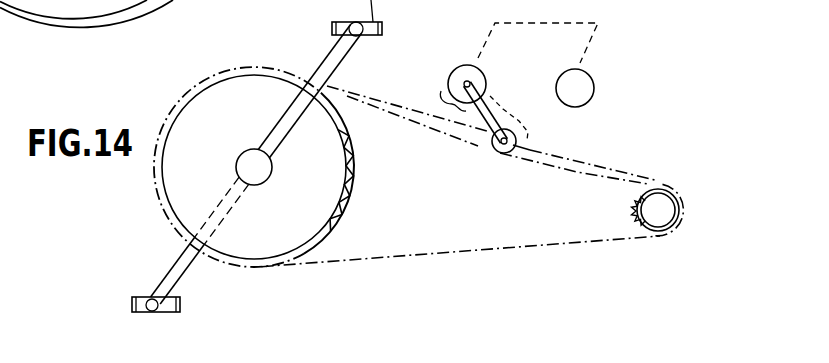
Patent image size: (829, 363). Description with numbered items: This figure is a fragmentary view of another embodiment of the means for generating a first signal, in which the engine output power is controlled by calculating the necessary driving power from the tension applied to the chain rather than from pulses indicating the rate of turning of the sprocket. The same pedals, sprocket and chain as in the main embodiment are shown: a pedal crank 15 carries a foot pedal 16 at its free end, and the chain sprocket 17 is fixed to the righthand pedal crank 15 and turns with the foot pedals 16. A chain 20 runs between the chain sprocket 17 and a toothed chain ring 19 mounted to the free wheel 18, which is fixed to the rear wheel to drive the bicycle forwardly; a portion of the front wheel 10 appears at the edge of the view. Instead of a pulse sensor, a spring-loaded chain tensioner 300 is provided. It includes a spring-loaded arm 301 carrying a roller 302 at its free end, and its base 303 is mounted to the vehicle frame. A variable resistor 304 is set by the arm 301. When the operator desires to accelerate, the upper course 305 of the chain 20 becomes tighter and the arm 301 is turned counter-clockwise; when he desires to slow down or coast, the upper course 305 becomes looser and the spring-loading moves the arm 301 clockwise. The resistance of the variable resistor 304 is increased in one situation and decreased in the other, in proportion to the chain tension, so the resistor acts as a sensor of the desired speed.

The front wheel 10 is at (139, 13).
The pedal crank 15 is at (329, 53).
The foot pedal 16 is at (150, 311).
The chain sprocket 17 is at (353, 147).
The free wheel 18 is at (685, 182).
The toothed chain ring 19 is at (641, 215).
The chain 20 is at (359, 264).
The spring-loaded chain tensioner 300 is at (520, 56).
The spring-loaded arm 301 is at (491, 131).
The roller 302 is at (517, 148).
The base 303 is at (451, 73).
The variable resistor 304 is at (593, 81).
The upper course 305 is at (570, 169).